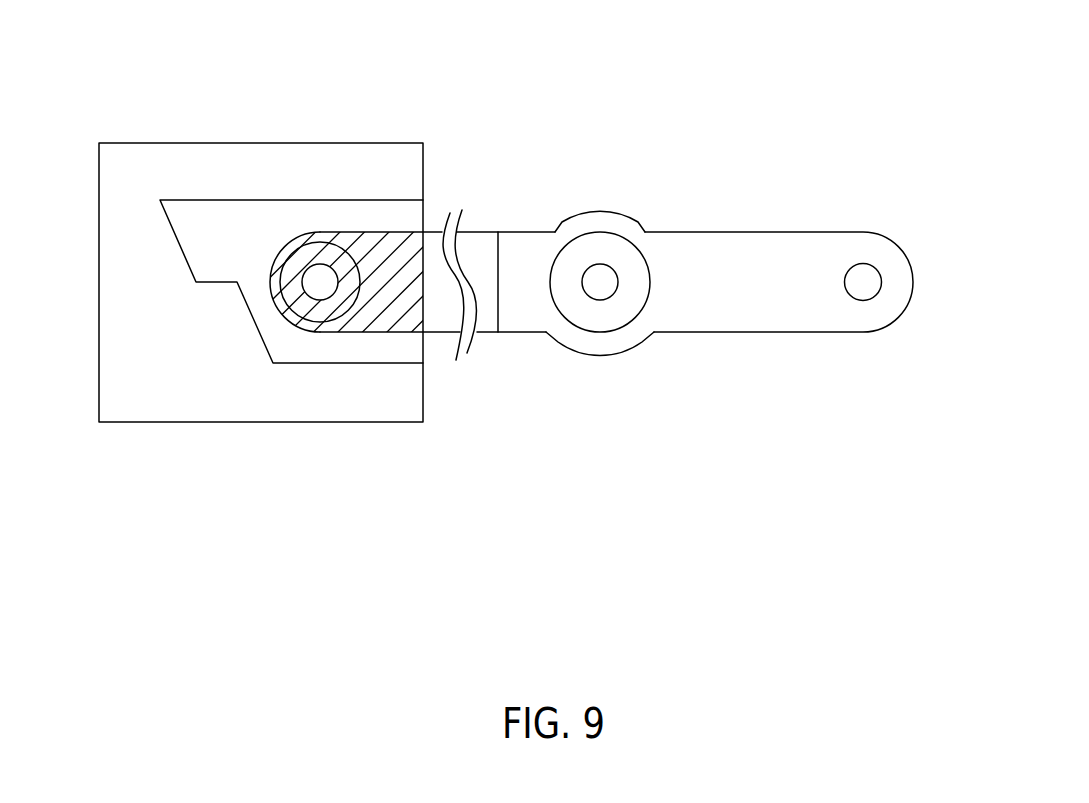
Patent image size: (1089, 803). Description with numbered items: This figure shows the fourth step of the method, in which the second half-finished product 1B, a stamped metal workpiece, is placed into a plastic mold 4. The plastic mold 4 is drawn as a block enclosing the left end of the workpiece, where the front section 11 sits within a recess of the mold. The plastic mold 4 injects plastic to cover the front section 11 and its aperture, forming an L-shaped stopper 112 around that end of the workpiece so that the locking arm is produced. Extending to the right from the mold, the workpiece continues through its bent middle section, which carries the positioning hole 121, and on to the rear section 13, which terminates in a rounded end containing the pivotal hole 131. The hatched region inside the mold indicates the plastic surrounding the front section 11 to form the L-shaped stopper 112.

The second half-finished product 1B is at (555, 107).
The plastic mold 4 is at (323, 167).
The L-shaped stopper 112 is at (257, 323).
The front section 11 is at (324, 312).
The positioning hole 121 is at (600, 282).
The rear section 13 is at (777, 256).
The pivotal hole 131 is at (863, 282).